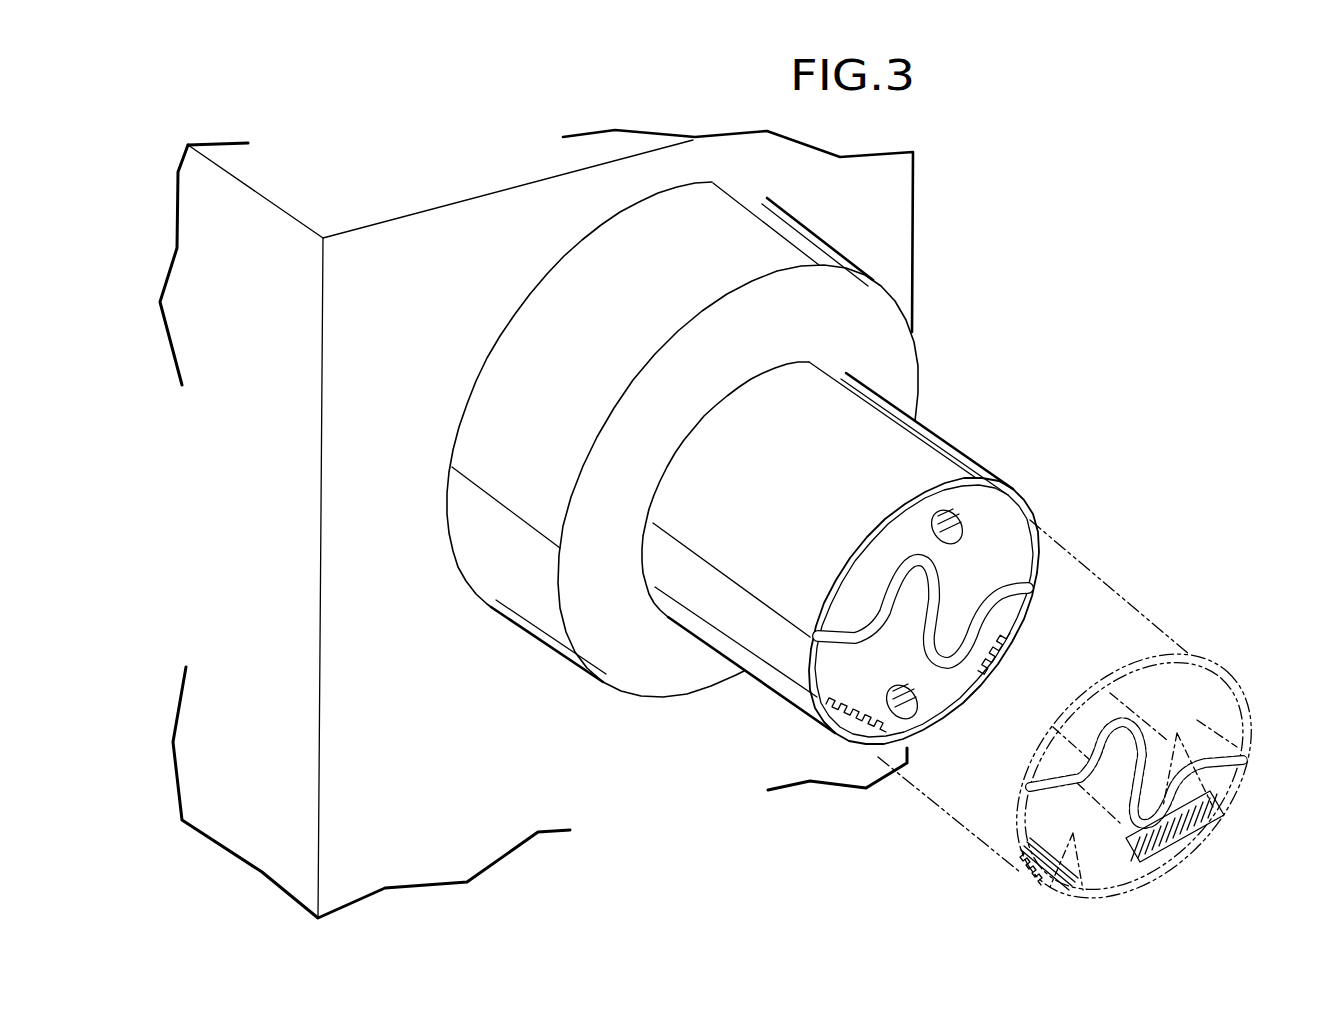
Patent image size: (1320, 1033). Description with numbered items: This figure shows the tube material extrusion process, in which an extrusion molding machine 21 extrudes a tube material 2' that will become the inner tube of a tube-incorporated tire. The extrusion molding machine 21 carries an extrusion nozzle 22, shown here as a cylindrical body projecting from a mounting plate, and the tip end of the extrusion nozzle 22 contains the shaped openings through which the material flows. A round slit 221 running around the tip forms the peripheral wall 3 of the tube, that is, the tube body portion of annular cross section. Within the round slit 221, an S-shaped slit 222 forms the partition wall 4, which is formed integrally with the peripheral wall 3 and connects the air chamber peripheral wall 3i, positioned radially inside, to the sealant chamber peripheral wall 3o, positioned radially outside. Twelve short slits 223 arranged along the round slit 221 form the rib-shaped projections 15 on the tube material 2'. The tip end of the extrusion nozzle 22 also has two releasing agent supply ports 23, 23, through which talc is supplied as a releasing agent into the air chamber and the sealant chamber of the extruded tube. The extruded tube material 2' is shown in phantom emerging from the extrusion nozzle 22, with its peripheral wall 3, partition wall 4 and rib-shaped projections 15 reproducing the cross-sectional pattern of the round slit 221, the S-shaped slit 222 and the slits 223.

The extrusion molding machine 21 is at (923, 296).
The extrusion nozzle 22 is at (967, 455).
The round slit 221 is at (930, 498).
The S-shaped slit 222 is at (930, 614).
The slits 223 is at (880, 752).
The releasing agent supply ports 23 is at (942, 542).
The tube material 2' is at (1047, 677).
The peripheral wall 3 is at (1283, 805).
The sealant chamber peripheral wall 3o is at (1250, 764).
The air chamber peripheral wall 3i is at (1153, 867).
The partition wall 4 is at (1093, 777).
The rib-shaped projections 15 is at (1122, 794).